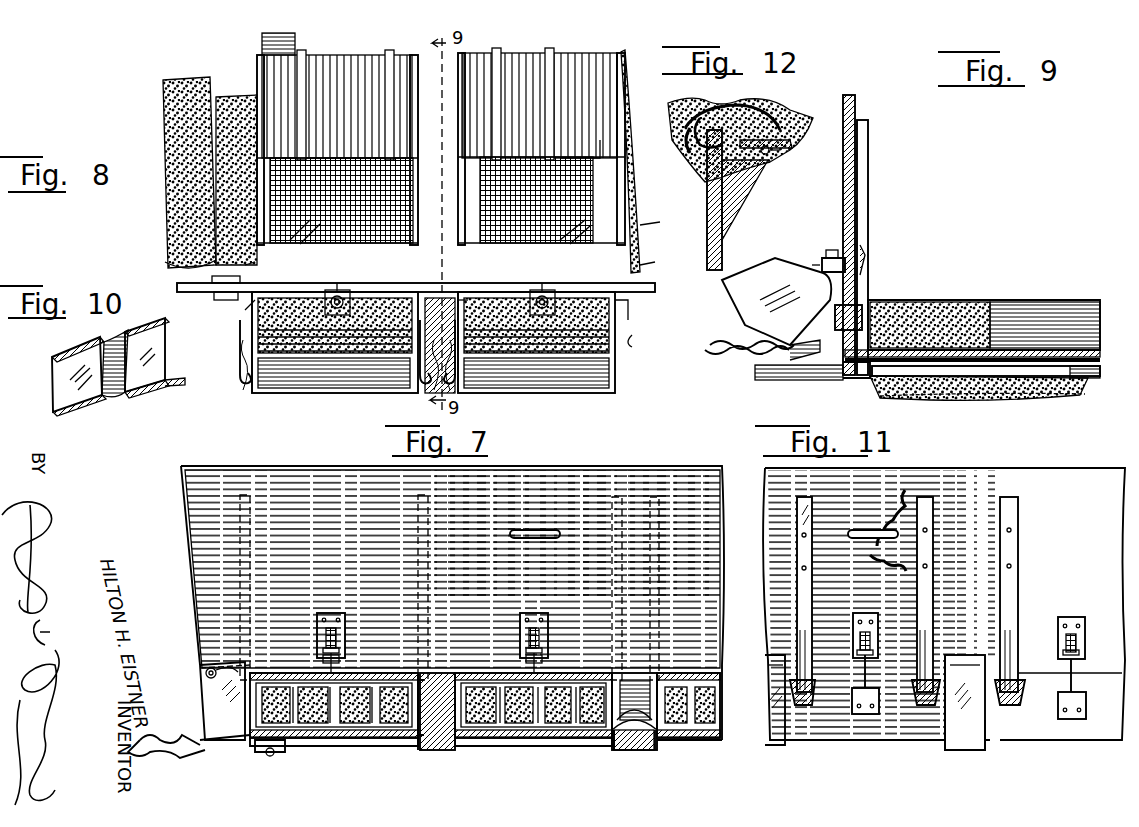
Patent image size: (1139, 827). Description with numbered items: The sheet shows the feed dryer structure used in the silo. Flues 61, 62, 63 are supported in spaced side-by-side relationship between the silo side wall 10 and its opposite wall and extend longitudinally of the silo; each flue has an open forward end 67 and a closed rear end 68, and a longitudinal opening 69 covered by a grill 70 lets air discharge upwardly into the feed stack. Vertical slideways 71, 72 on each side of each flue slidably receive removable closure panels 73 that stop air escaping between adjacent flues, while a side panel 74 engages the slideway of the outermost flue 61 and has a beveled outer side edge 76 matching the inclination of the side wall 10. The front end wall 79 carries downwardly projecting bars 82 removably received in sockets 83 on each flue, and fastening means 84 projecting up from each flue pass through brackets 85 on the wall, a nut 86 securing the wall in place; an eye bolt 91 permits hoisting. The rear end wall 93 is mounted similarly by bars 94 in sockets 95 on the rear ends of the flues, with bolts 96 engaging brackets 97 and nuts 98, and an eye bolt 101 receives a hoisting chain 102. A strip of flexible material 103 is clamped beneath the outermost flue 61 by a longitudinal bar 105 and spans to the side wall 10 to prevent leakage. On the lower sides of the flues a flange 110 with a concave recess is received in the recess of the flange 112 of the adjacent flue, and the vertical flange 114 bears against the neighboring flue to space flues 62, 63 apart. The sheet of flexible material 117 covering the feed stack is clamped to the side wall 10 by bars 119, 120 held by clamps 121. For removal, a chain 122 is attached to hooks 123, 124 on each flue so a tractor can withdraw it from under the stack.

In FIG. 12, the side wall 10 is at (707, 270).
In FIG. 8, the flue 61 is at (330, 403).
In FIG. 9, the flue 61 is at (724, 308).
In FIG. 7, the flue 61 is at (390, 752).
In FIG. 11, the flue 61 is at (1035, 732).
In FIG. 8, the flue 62 is at (572, 403).
In FIG. 10, the flue 62 is at (100, 425).
In FIG. 7, the flue 62 is at (480, 746).
In FIG. 11, the flue 62 is at (875, 740).
In FIG. 10, the flue 63 is at (170, 392).
In FIG. 7, the flue 63 is at (712, 752).
In FIG. 8, the open forward end 67 is at (433, 373).
In FIG. 7, the open forward end 67 is at (395, 725).
In FIG. 11, the closed rear end 68 is at (920, 740).
In FIG. 8, the longitudinal opening 69 is at (272, 243).
In FIG. 8, the grill 70 is at (358, 245).
In FIG. 8, the vertical slideway 71 is at (471, 303).
In FIG. 9, the vertical slideway 71 is at (842, 378).
In FIG. 7, the vertical slideway 71 is at (436, 734).
In FIG. 11, the vertical slideway 71 is at (941, 720).
In FIG. 8, the vertical slideway 72 is at (628, 302).
In FIG. 7, the vertical slideway 72 is at (420, 750).
In FIG. 11, the vertical slideway 72 is at (970, 750).
In FIG. 8, the closure panel 73 is at (440, 280).
In FIG. 7, the closure panel 73 is at (445, 750).
In FIG. 11, the closure panel 73 is at (952, 750).
In FIG. 8, the side panel 74 is at (200, 292).
In FIG. 7, the side panel 74 is at (212, 729).
In FIG. 7, the outer side edge 76 is at (200, 680).
In FIG. 8, the front end wall 79 is at (250, 300).
In FIG. 9, the front end wall 79 is at (841, 103).
In FIG. 7, the front end wall 79 is at (698, 509).
In FIG. 8, the downwardly projecting bar 82 is at (245, 268).
In FIG. 9, the downwardly projecting bar 82 is at (855, 245).
In FIG. 7, the downwardly projecting bar 82 is at (240, 548).
In FIG. 8, the socket 83 is at (430, 252).
In FIG. 9, the socket 83 is at (835, 319).
In FIG. 7, the socket 83 is at (640, 672).
In FIG. 8, the fastening means 84 is at (325, 306).
In FIG. 9, the fastening means 84 is at (822, 262).
In FIG. 7, the fastening means 84 is at (340, 672).
In FIG. 8, the bracket 85 is at (327, 300).
In FIG. 9, the bracket 85 is at (866, 250).
In FIG. 7, the bracket 85 is at (530, 613).
In FIG. 8, the nut 86 is at (350, 306).
In FIG. 9, the nut 86 is at (820, 275).
In FIG. 7, the nut 86 is at (331, 672).
In FIG. 7, the eye bolt 91 is at (548, 530).
In FIG. 11, the rear end wall 93 is at (1082, 514).
In FIG. 11, the downwardly projecting bar 94 is at (795, 556).
In FIG. 11, the socket 95 is at (800, 705).
In FIG. 11, the bolt 96 is at (852, 705).
In FIG. 11, the bracket 97 is at (880, 622).
In FIG. 11, the nut 98 is at (875, 650).
In FIG. 11, the eye bolt 101 is at (898, 534).
In FIG. 11, the hoisting chain 102 is at (905, 490).
In FIG. 8, the strip of flexible material 103 is at (215, 82).
In FIG. 9, the strip of flexible material 103 is at (1065, 396).
In FIG. 7, the strip of flexible material 103 is at (172, 730).
In FIG. 8, the bar 105 is at (296, 42).
In FIG. 9, the bar 105 is at (790, 382).
In FIG. 7, the bar 105 is at (288, 752).
In FIG. 8, the longitudinally extending flange 110 is at (670, 227).
In FIG. 10, the longitudinally extending flange 110 is at (122, 400).
In FIG. 9, the longitudinally extending flange 110 is at (1085, 376).
In FIG. 7, the longitudinally extending flange 110 is at (618, 750).
In FIG. 8, the longitudinally extending flange 112 is at (462, 55).
In FIG. 10, the longitudinally extending flange 112 is at (160, 372).
In FIG. 9, the longitudinally extending flange 112 is at (1101, 336).
In FIG. 7, the longitudinally extending flange 112 is at (680, 738).
In FIG. 8, the vertical flange 114 is at (414, 64).
In FIG. 10, the vertical flange 114 is at (135, 345).
In FIG. 7, the vertical flange 114 is at (652, 750).
In FIG. 12, the sheet of flexible material 117 is at (790, 158).
In FIG. 12, the strip or bar 119 is at (690, 170).
In FIG. 12, the strip or bar 120 is at (745, 175).
In FIG. 12, the clamp 121 is at (755, 108).
In FIG. 9, the chain 122 is at (742, 355).
In FIG. 8, the hook 123 is at (365, 372).
In FIG. 8, the hook 124 is at (352, 60).
In FIG. 9, the hook 124 is at (772, 358).
In FIG. 7, the hook 124 is at (382, 746).